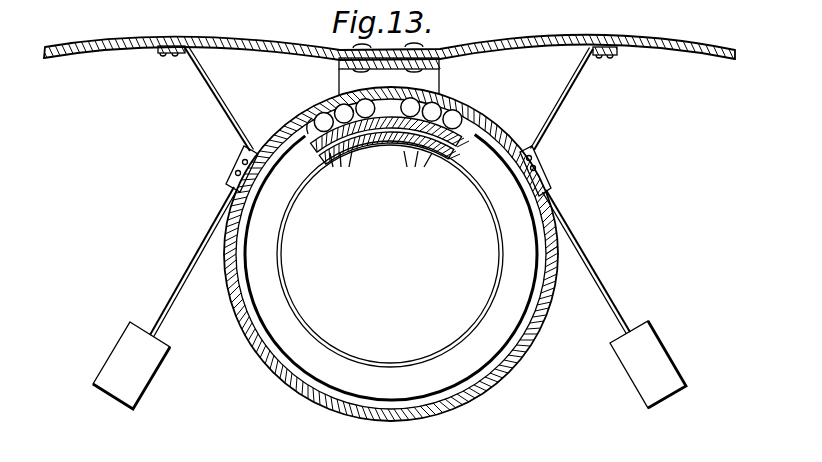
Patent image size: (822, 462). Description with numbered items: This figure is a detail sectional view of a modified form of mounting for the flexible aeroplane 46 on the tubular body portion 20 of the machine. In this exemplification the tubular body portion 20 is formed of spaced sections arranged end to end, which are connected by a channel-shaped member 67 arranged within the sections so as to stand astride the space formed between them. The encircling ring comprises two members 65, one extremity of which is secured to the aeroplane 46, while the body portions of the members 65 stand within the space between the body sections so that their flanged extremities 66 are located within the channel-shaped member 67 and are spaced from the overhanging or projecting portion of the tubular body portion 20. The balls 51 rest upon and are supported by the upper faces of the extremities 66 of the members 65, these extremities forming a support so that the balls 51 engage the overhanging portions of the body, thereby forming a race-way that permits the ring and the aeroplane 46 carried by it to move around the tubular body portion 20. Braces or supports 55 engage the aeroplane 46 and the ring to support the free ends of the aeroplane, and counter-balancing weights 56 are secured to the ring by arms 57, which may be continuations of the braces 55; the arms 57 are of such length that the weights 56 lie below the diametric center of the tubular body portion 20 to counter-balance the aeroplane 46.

The aeroplane 46 is at (586, 45).
The members of the encircling ring 65 is at (439, 82).
The tubular body portion 20 is at (461, 110).
The flanged extremities of the members 66 is at (384, 137).
The channel-shaped member 67 is at (392, 145).
The balls 51 is at (379, 171).
The braces or supports 55 is at (211, 94).
The arms 57 is at (204, 241).
The counter-balancing weights 56 is at (113, 365).